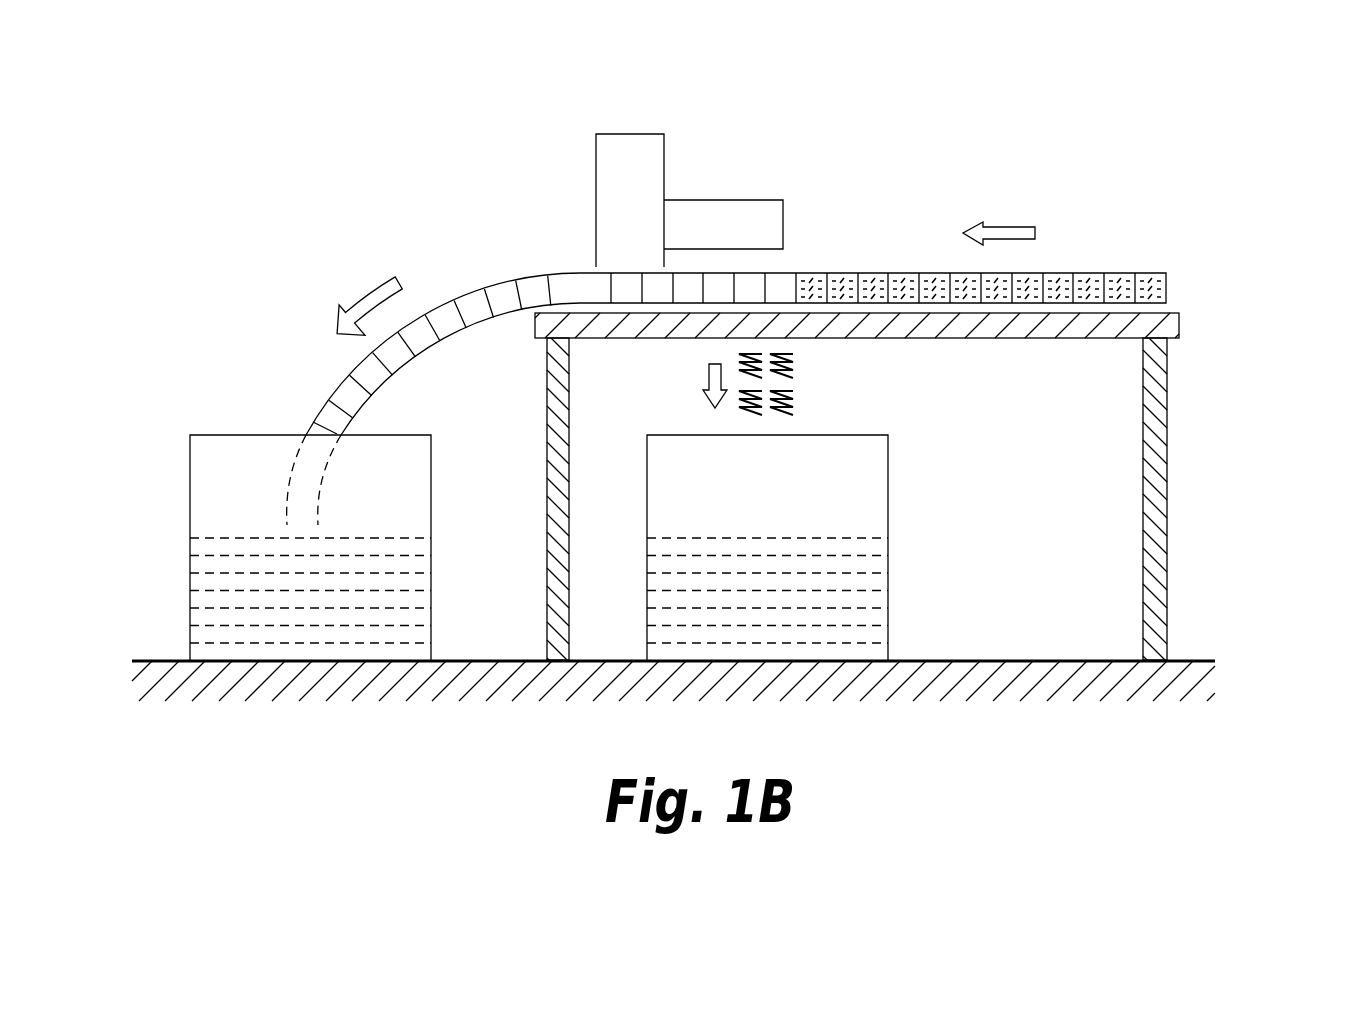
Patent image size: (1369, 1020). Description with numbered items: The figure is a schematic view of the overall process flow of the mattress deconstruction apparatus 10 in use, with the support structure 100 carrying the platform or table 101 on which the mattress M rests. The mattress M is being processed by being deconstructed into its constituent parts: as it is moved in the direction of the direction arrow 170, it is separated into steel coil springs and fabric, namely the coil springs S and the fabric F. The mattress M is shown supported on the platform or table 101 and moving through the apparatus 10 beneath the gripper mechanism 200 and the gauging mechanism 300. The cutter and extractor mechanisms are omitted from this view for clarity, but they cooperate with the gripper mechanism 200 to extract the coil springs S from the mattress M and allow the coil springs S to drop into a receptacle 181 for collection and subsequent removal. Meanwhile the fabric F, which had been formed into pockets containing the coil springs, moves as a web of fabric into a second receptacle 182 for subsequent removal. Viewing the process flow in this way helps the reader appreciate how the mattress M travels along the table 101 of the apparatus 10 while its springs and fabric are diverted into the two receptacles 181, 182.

The apparatus 10 is at (1275, 258).
The stage/build platform support 100 is at (1183, 366).
The platform or table 101 is at (1060, 322).
The direction arrow 170 is at (1010, 226).
The receptacle 181 is at (888, 500).
The second receptacle 182 is at (190, 500).
The gripper mechanism 200 is at (630, 156).
The gauging mechanism 300 is at (737, 218).
The mattress M is at (875, 273).
The coil springs S is at (794, 357).
The fabric F is at (324, 404).